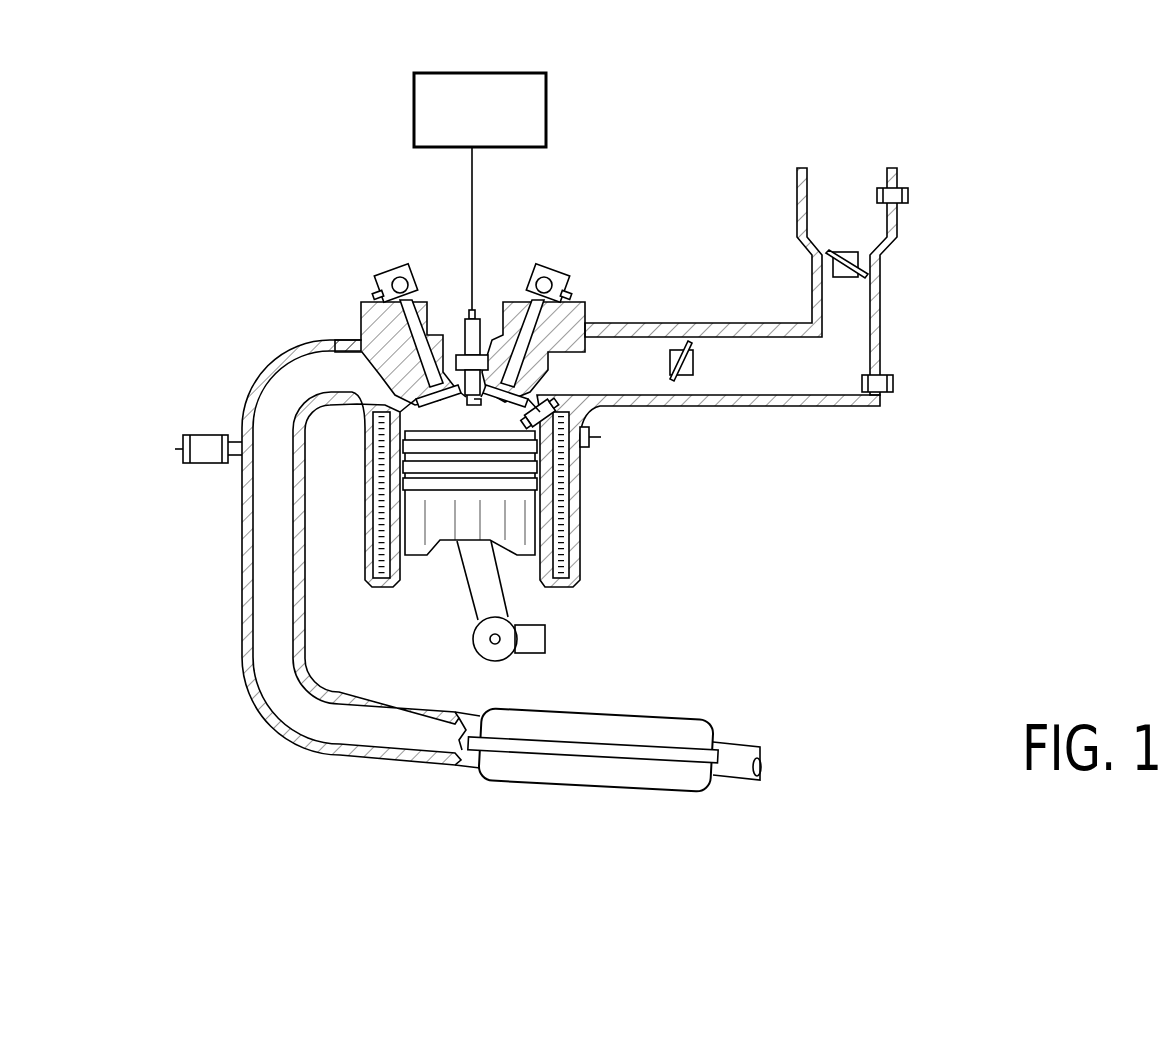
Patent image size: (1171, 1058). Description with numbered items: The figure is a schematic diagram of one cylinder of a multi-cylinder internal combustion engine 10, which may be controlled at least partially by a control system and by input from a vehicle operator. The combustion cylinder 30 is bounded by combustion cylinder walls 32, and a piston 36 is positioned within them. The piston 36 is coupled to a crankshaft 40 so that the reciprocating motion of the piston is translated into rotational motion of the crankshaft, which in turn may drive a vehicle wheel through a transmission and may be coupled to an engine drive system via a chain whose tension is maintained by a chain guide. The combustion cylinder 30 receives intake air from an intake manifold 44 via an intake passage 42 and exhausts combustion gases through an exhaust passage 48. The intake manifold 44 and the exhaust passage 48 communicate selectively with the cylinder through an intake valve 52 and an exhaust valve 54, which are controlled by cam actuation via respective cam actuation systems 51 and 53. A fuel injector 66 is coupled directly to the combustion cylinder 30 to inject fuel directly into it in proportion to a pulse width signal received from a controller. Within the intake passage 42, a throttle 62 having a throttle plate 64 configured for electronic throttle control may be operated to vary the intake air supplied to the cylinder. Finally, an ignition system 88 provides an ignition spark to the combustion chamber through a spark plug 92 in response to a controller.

The internal combustion engine 10 is at (288, 251).
The ignition system 88 is at (547, 92).
The spark plug 92 is at (467, 345).
The cam actuation system 53 is at (387, 256).
The cam actuation system 51 is at (554, 254).
The exhaust valve 54 is at (415, 388).
The intake valve 52 is at (535, 388).
The exhaust passage 48 is at (313, 386).
The intake manifold 44 is at (763, 376).
The intake passage 42 is at (834, 225).
The throttle 62 is at (862, 257).
The throttle plate 64 is at (826, 256).
The combustion cylinder 30 is at (447, 413).
The combustion cylinder walls 32 is at (407, 580).
The piston 36 is at (452, 523).
The crankshaft 40 is at (480, 663).
The fuel injector 66 is at (563, 412).